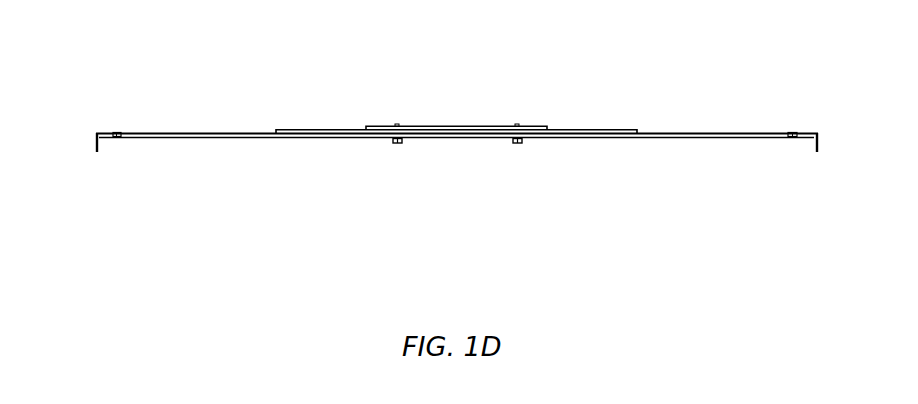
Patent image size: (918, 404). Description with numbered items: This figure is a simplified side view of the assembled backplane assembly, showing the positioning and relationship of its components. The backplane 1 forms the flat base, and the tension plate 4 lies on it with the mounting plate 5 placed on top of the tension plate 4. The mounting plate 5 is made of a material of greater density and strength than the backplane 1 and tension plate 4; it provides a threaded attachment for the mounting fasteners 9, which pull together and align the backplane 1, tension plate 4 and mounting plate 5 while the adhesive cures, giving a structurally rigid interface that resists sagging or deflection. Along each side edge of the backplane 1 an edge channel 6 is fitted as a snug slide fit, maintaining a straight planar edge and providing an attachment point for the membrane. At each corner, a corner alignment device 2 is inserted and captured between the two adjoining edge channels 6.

The backplane 1 is at (203, 133).
The corner alignment device 2 is at (113, 132).
The tension plate 4 is at (333, 129).
The mounting plate 5 is at (498, 125).
The edge channel 6 is at (98, 153).
The mounting fastener 9 is at (515, 144).